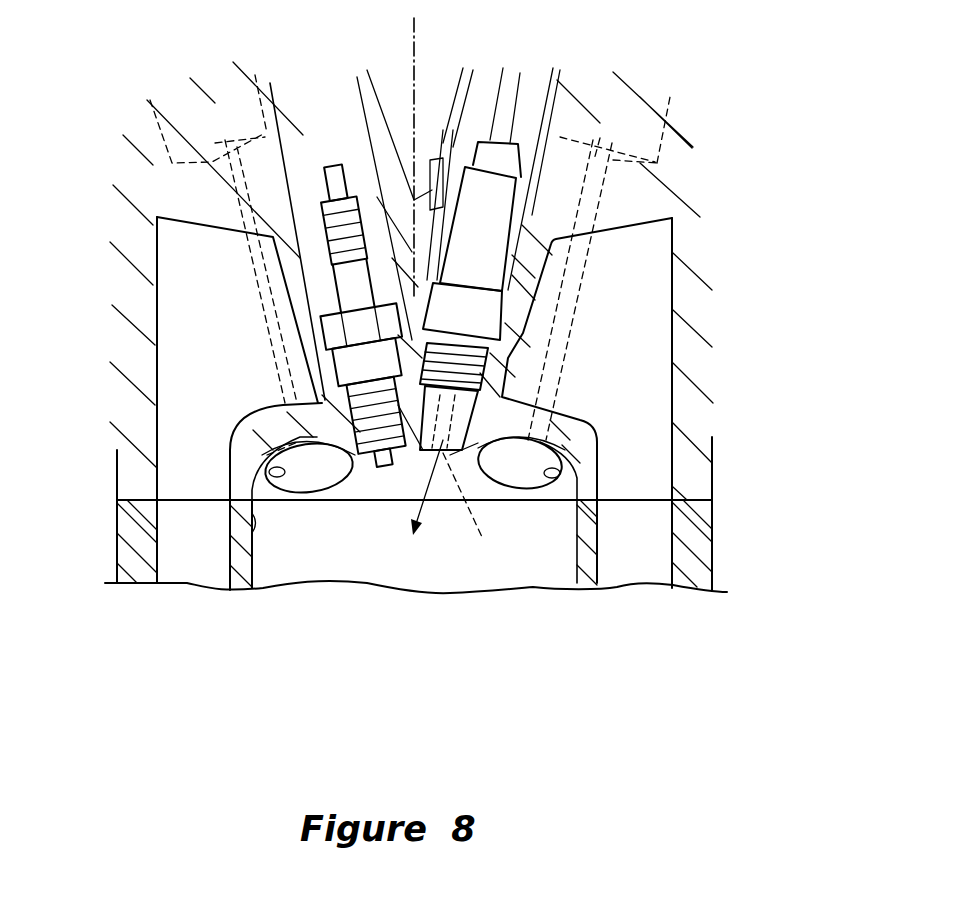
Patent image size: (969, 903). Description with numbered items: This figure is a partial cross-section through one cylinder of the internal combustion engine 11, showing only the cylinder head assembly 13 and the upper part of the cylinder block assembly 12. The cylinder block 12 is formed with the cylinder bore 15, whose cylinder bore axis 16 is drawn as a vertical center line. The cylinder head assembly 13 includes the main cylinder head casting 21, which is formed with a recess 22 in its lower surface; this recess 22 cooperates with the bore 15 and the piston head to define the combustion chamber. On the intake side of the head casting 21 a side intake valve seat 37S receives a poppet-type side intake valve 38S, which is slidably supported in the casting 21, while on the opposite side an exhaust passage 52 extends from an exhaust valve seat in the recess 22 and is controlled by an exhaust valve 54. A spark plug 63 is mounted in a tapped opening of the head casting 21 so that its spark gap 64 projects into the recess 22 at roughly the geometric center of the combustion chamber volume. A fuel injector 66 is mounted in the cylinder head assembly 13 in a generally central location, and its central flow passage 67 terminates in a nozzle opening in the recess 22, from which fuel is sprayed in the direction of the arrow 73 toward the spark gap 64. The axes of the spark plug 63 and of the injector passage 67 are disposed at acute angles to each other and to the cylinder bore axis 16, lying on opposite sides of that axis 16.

The engine 11 is at (765, 126).
The cylinder block assembly 12 is at (703, 563).
The cylinder head assembly 13 is at (795, 348).
The cylinder bore 15 is at (233, 563).
The cylinder bore axis 16 is at (414, 62).
The cylinder head casting 21 is at (692, 298).
The cylinder head recess 22 is at (360, 482).
The side intake valve seat 37S is at (557, 477).
The side intake valve 38S is at (530, 473).
The exhaust passage 52 is at (277, 472).
The exhaust valve 54 is at (300, 478).
The spark plug 63 is at (329, 158).
The spark gap 64 is at (388, 474).
The fuel injector 66 is at (523, 256).
The central flow passage 67 is at (473, 516).
The fuel spray direction arrow 73 is at (417, 505).